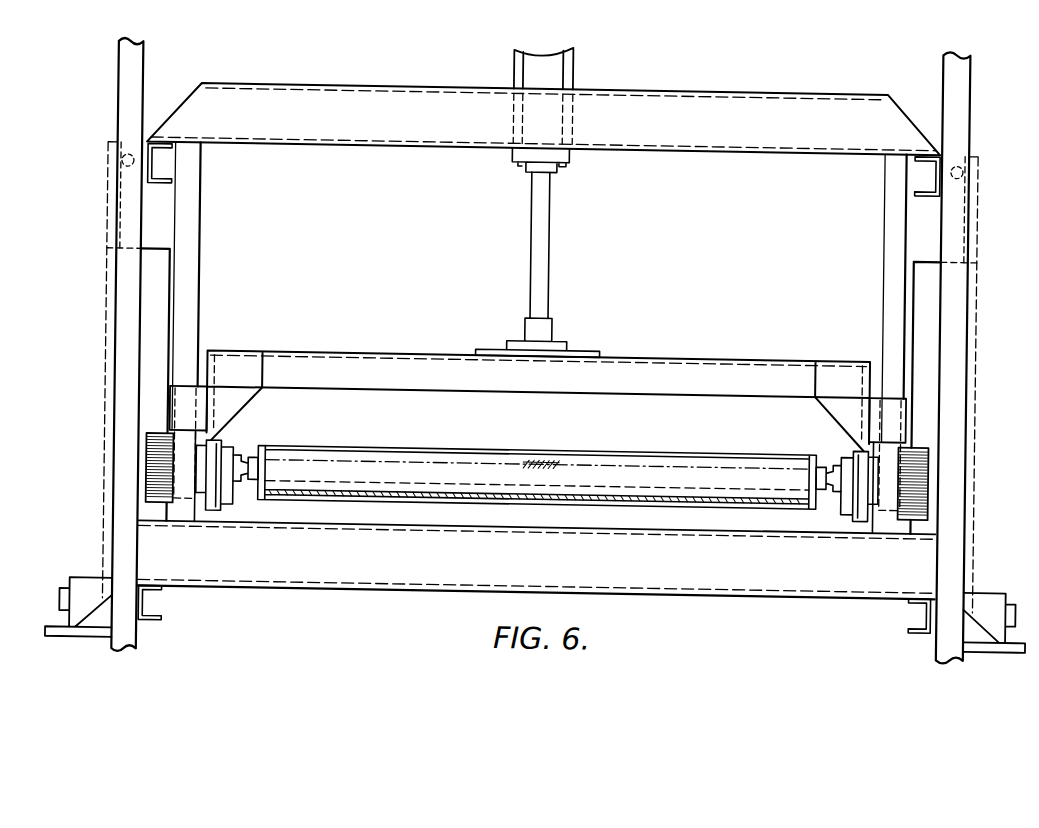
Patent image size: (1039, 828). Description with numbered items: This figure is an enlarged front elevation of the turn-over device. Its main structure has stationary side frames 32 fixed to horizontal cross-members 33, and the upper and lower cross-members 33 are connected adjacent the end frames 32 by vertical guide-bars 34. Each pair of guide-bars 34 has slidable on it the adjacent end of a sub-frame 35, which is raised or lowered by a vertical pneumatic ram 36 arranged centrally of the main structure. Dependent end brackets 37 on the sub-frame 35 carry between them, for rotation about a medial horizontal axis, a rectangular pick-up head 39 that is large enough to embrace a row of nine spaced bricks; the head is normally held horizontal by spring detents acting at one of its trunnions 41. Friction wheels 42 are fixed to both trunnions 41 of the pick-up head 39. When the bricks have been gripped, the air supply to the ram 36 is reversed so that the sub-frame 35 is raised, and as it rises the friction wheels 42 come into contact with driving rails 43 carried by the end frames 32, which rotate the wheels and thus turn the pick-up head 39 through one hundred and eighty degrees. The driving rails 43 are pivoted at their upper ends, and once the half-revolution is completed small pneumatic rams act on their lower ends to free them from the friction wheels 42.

The side frame 32 is at (122, 437).
The horizontal cross-member 33 is at (418, 132).
The vertical guide-bar 34 is at (188, 246).
The sub-frame 35 is at (312, 370).
The vertical pneumatic ram 36 is at (543, 70).
The dependent end bracket 37 is at (210, 446).
The pick-up head 39 is at (361, 471).
The trunnion 41 is at (246, 487).
The friction wheel 42 is at (159, 496).
The driving rail 43 is at (154, 316).